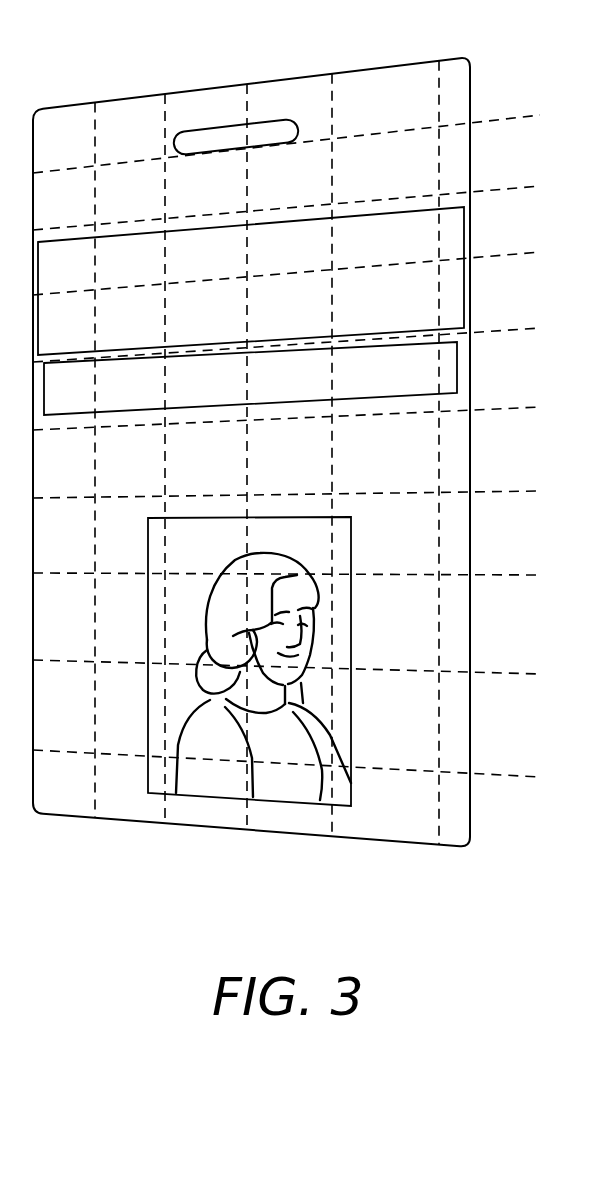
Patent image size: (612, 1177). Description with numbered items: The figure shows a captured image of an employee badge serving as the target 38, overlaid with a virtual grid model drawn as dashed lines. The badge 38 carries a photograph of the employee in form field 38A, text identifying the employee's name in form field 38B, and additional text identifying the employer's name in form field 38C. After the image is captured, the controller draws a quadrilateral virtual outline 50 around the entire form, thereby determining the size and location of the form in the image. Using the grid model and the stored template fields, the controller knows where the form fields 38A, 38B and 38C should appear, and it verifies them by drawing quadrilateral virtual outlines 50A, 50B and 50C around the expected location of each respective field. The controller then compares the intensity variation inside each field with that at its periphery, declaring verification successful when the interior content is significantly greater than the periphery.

The target 38 is at (60, 790).
The form field 38A is at (222, 762).
The form field 38B is at (392, 250).
The form field 38C is at (407, 376).
The quadrilateral virtual outline 50 is at (72, 109).
The quadrilateral virtual outline 50A is at (352, 713).
The quadrilateral virtual outline 50B is at (386, 210).
The quadrilateral virtual outline 50C is at (405, 393).